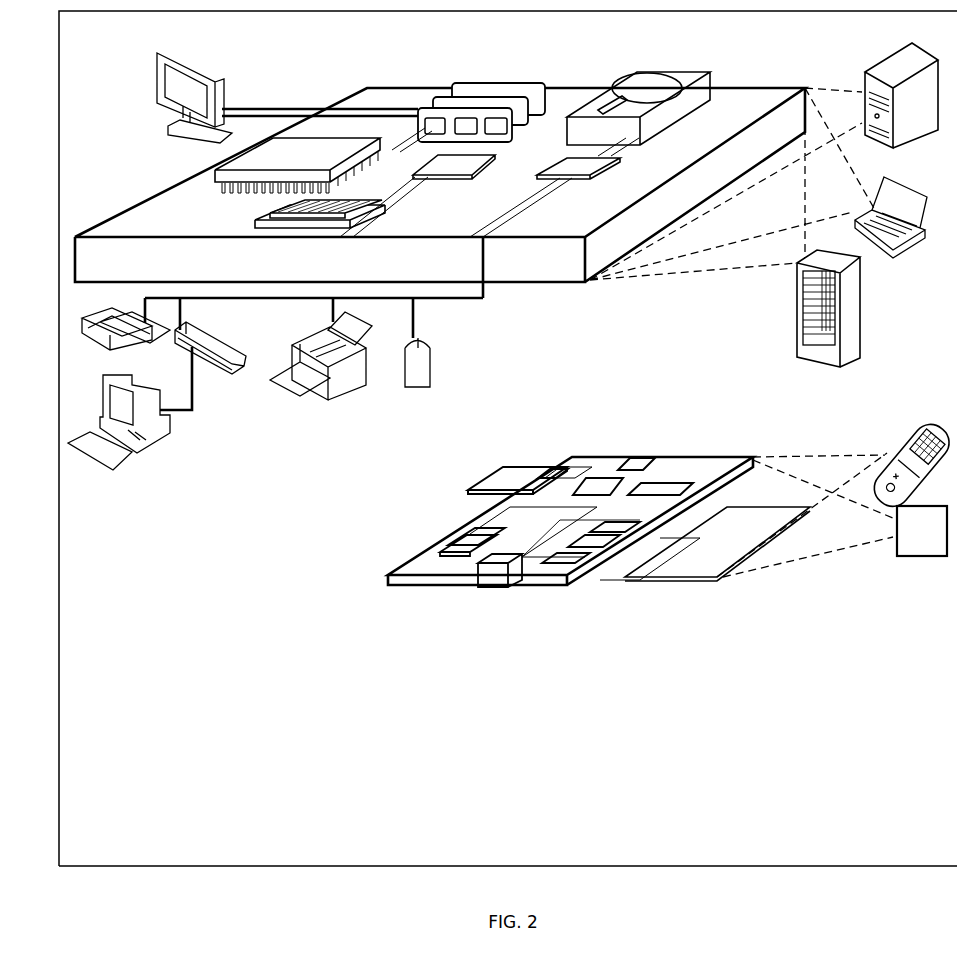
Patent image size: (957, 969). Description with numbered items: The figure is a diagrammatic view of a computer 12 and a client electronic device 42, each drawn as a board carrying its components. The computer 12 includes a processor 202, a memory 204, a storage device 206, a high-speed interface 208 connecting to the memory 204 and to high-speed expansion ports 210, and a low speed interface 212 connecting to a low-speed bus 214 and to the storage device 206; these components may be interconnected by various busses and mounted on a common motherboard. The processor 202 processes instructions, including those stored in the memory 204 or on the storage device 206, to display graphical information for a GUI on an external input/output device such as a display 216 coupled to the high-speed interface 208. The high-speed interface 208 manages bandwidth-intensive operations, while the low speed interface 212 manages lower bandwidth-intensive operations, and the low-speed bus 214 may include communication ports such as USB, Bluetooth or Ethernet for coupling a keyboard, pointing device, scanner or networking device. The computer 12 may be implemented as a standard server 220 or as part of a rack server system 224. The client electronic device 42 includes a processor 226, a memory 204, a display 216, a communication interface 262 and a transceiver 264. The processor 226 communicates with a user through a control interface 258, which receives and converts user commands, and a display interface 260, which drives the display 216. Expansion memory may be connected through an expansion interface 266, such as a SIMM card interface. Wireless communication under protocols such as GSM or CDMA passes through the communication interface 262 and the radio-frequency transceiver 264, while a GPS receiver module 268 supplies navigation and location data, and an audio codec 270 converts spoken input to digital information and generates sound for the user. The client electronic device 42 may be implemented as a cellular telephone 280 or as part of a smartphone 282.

The computer 12 is at (306, 60).
The client electronic device 42 is at (546, 440).
The processor 202 is at (215, 178).
The memory 204 is at (456, 84).
The storage device 206 is at (636, 76).
The high-speed interface 208 is at (413, 132).
The high-speed expansion ports 210 is at (262, 214).
The low speed interface 212 is at (580, 162).
The low-speed bus 214 is at (486, 240).
The display 216 is at (166, 56).
The standard server 220 is at (864, 80).
The rack server system 224 is at (798, 332).
The processor 226 is at (508, 580).
The control interface 258 is at (493, 468).
The display interface 260 is at (605, 565).
The communication interface 262 is at (596, 478).
The transceiver 264 is at (668, 485).
The expansion interface 266 is at (547, 471).
The GPS receiver module 268 is at (637, 465).
The audio codec 270 is at (632, 581).
The cellular telephone 280 is at (929, 422).
The smartphone 282 is at (925, 506).